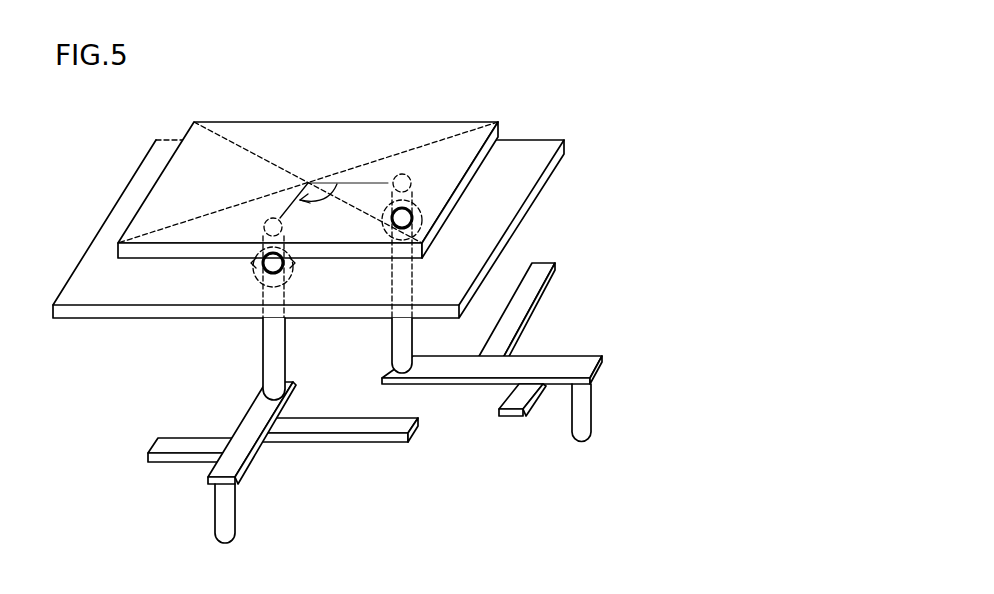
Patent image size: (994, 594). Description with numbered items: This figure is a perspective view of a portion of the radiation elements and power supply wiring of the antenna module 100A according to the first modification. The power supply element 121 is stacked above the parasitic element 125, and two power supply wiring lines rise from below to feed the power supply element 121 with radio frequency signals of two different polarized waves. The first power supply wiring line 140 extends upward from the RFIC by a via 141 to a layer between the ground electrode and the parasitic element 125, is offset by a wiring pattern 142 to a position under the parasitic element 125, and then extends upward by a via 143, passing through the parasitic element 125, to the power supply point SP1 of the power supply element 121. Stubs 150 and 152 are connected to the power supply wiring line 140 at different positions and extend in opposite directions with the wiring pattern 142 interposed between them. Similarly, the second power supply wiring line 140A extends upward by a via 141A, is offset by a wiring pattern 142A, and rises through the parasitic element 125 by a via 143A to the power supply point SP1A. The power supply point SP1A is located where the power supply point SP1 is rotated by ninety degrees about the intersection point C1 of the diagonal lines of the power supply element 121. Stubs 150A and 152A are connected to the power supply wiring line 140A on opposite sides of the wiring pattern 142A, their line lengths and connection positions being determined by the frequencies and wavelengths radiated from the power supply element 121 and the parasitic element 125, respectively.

The antenna module 100A is at (577, 100).
The power supply element 121 is at (483, 122).
The parasitic element 125 is at (548, 147).
The power supply wiring line 140 is at (615, 392).
The via 141 is at (590, 421).
The wiring pattern 142 is at (572, 362).
The via 143 is at (392, 343).
The stub 150 is at (512, 405).
The stub 152 is at (540, 267).
The power supply wiring line 140A is at (247, 373).
The via 141A is at (232, 522).
The wiring pattern 142A is at (252, 425).
The via 143A is at (273, 343).
The stub 150A is at (172, 442).
The stub 152A is at (330, 427).
The power supply point SP1 is at (400, 174).
The power supply point SP1A is at (273, 218).
The intersection point of the diagonal lines C1 is at (308, 183).